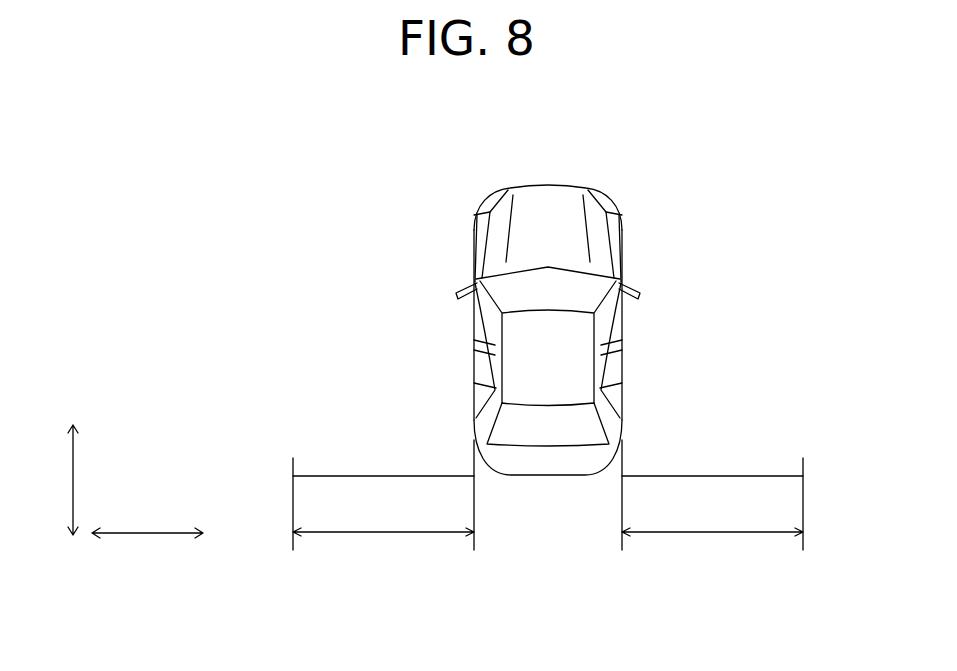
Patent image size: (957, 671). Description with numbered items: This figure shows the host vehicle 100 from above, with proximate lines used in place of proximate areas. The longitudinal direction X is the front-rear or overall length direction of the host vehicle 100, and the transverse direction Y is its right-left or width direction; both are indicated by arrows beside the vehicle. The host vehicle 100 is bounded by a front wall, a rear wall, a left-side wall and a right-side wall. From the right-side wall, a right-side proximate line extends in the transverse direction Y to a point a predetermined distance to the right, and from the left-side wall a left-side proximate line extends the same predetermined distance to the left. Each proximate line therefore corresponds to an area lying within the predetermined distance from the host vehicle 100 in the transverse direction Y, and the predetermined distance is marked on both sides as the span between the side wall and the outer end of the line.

The host vehicle 100 is at (507, 186).
The longitudinal direction X is at (72, 478).
The transverse direction Y is at (146, 535).